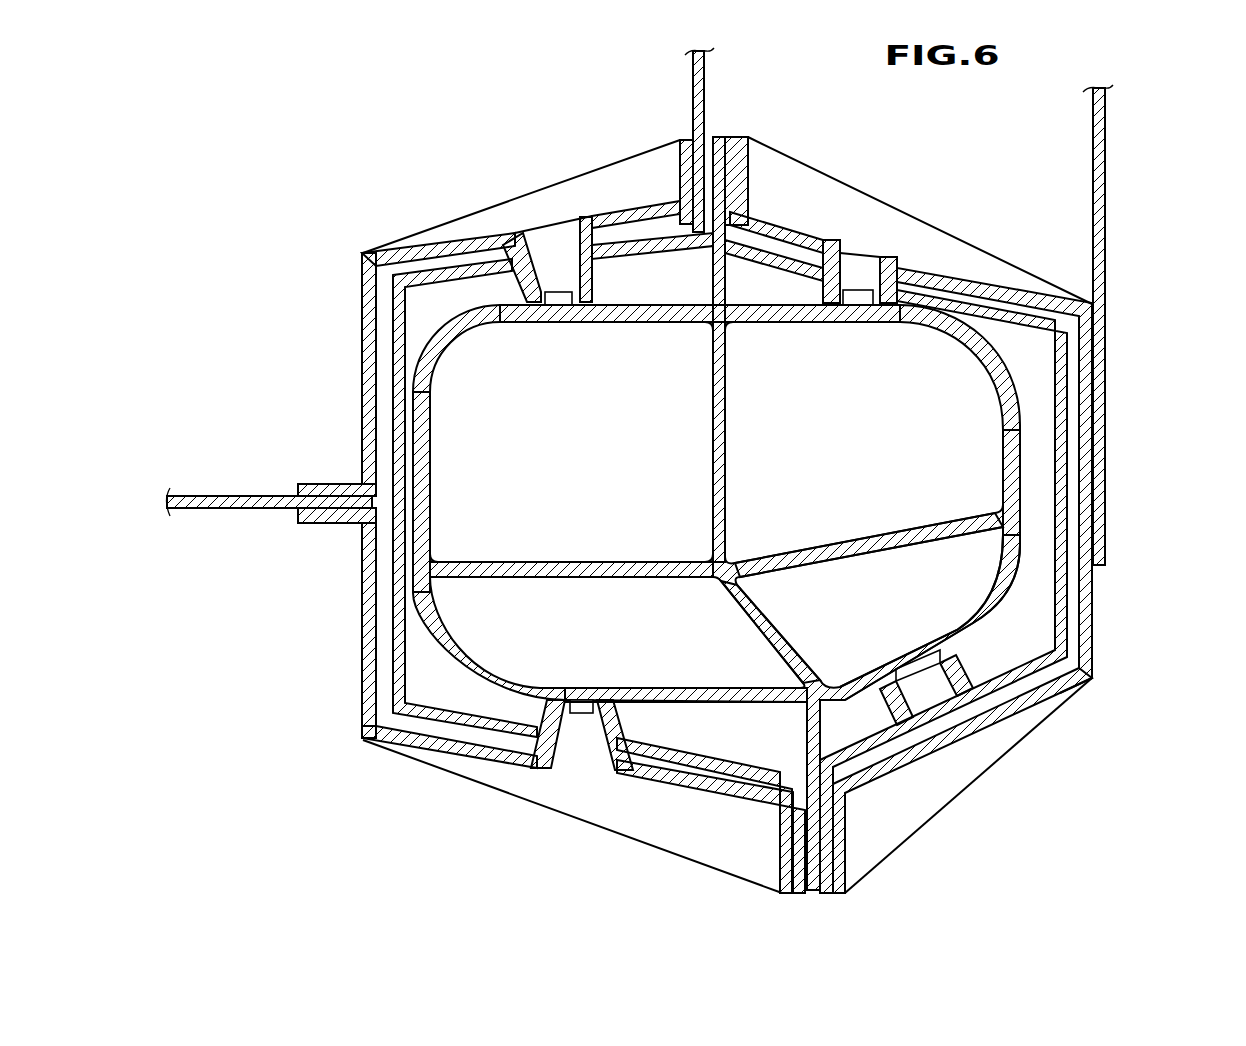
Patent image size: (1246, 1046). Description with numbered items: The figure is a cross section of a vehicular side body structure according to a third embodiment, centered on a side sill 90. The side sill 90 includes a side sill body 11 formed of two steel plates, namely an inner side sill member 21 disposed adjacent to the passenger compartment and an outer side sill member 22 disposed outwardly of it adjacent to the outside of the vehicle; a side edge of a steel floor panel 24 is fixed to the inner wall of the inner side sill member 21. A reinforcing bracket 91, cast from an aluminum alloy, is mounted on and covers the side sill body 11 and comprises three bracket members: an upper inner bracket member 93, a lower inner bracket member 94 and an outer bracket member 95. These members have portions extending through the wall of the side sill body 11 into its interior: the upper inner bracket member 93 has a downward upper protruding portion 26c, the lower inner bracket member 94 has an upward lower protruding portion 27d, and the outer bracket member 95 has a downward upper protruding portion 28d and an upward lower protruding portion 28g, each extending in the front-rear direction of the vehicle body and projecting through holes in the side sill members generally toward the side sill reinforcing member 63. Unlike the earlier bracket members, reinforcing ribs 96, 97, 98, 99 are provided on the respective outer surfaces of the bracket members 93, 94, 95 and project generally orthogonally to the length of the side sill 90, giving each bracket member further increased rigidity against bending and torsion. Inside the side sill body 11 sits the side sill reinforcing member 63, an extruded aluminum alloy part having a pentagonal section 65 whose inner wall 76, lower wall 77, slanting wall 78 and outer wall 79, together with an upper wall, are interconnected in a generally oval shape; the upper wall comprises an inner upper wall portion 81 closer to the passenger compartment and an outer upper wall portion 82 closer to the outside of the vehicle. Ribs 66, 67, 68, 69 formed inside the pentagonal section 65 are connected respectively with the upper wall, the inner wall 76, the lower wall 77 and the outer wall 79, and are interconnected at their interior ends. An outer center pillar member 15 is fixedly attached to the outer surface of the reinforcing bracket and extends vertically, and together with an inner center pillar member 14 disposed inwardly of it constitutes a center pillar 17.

The side sill body 11 is at (673, 493).
The inner center pillar member 14 is at (693, 92).
The outer center pillar member 15 is at (1100, 203).
The center pillar 17 is at (1155, 320).
The inner side sill member 21 is at (400, 388).
The outer side sill member 22 is at (966, 574).
The floor panel 24 is at (210, 495).
The upper protruding portion 26c is at (527, 278).
The lower protruding portion 27d is at (547, 717).
The upper protruding portion 28d is at (887, 297).
The lower protruding portion 28g is at (873, 710).
The side sill reinforcing member 63 is at (1012, 583).
The pentagonal section 65 is at (749, 504).
The rib 66 is at (712, 420).
The rib 67 is at (560, 565).
The rib 68 is at (763, 632).
The rib 69 is at (855, 540).
The inner wall 76 is at (420, 455).
The lower wall 77 is at (683, 703).
The slanting wall 78 is at (1073, 675).
The outer wall 79 is at (1008, 483).
The inner upper wall portion 81 is at (657, 313).
The outer upper wall portion 82 is at (790, 313).
The side sill 90 is at (673, 500).
The reinforcing bracket 91 is at (360, 650).
The upper inner bracket member 93 is at (604, 212).
The lower inner bracket member 94 is at (460, 757).
The outer bracket member 95 is at (967, 268).
The reinforcing rib 96 is at (538, 203).
The reinforcing rib 97 is at (620, 817).
The reinforcing rib 98 is at (1005, 735).
The reinforcing rib 99 is at (838, 200).